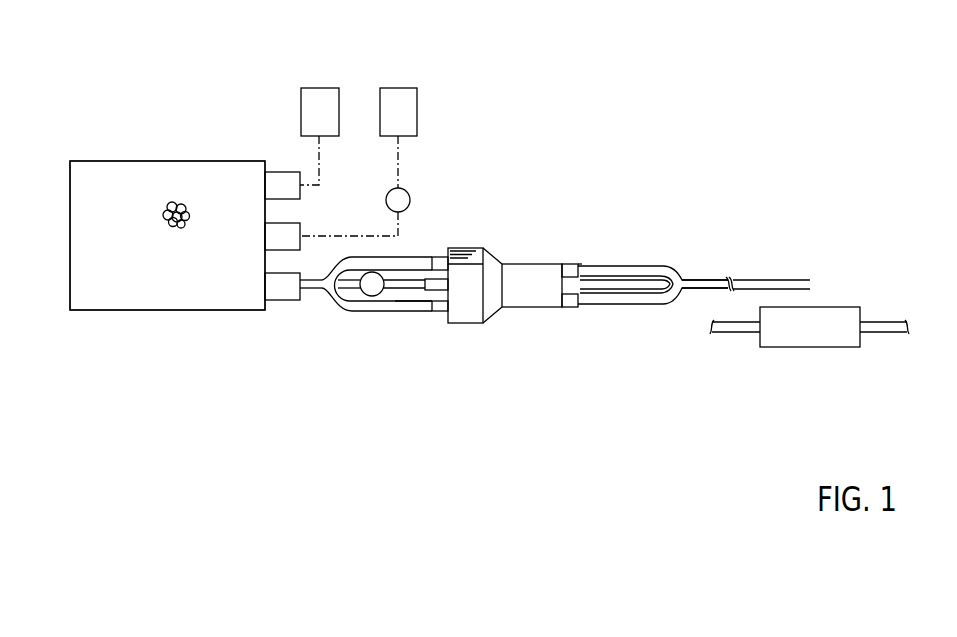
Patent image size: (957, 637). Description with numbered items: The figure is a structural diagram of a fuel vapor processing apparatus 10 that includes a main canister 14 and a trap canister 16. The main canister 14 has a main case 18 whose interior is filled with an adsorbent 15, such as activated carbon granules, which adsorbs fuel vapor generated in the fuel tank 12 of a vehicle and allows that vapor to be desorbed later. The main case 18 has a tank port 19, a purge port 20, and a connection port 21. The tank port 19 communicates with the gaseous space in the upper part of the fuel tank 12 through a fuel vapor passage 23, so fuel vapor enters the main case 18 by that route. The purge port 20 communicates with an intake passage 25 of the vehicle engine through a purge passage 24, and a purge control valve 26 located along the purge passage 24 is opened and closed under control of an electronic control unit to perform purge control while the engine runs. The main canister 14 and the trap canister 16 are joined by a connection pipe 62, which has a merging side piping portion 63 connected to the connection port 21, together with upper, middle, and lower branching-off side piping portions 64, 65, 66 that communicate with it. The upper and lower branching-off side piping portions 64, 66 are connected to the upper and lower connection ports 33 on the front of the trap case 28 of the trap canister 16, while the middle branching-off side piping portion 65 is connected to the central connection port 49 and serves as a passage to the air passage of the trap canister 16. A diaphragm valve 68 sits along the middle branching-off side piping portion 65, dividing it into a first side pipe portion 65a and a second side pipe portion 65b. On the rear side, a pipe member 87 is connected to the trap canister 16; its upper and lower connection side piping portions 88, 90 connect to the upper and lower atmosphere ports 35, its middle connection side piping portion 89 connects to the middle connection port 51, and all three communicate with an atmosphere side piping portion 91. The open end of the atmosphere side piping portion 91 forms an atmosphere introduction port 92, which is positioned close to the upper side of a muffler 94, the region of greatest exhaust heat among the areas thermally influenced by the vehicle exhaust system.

The fuel vapor processing apparatus 10 is at (693, 155).
The fuel tank 12 is at (316, 88).
The main canister 14 is at (120, 161).
The adsorbent 15 is at (177, 203).
The trap canister 16 is at (523, 263).
The main case 18 is at (140, 283).
The tank port 19 is at (282, 185).
The purge port 20 is at (285, 233).
The connection port 21 is at (278, 287).
The fuel vapor passage 23 is at (320, 159).
The purge passage 24 is at (399, 159).
The intake passage 25 is at (400, 88).
The purge control valve 26 is at (410, 194).
The trap case 28 is at (535, 306).
The upper and lower connection ports 33 is at (440, 257).
The upper and lower atmosphere ports 35 is at (568, 263).
The central connection port 49 is at (453, 285).
The middle connection port 51 is at (586, 263).
The connection pipe 62 is at (333, 305).
The merging side piping portion 63 is at (308, 281).
The upper branching-off side piping portion 64 is at (413, 258).
The middle branching-off side piping portion 65 is at (398, 302).
The first side pipe portion 65a is at (351, 287).
The second side pipe portion 65b is at (390, 290).
The lower branching-off side piping portion 66 is at (421, 302).
The diaphragm valve 68 is at (373, 297).
The pipe member 87 is at (667, 267).
The upper connection side piping portion 88 is at (625, 266).
The middle connection side piping portion 89 is at (621, 294).
The lower connection side piping portion 90 is at (657, 305).
The atmosphere side piping portion 91 is at (704, 280).
The atmosphere introduction port 92 is at (789, 280).
The muffler 94 is at (806, 338).